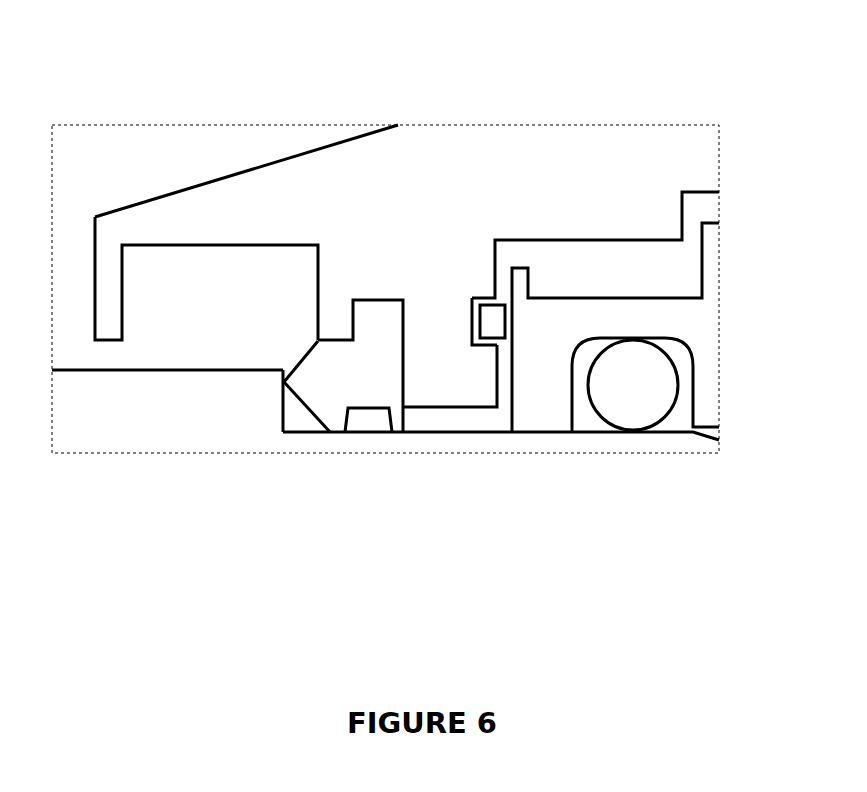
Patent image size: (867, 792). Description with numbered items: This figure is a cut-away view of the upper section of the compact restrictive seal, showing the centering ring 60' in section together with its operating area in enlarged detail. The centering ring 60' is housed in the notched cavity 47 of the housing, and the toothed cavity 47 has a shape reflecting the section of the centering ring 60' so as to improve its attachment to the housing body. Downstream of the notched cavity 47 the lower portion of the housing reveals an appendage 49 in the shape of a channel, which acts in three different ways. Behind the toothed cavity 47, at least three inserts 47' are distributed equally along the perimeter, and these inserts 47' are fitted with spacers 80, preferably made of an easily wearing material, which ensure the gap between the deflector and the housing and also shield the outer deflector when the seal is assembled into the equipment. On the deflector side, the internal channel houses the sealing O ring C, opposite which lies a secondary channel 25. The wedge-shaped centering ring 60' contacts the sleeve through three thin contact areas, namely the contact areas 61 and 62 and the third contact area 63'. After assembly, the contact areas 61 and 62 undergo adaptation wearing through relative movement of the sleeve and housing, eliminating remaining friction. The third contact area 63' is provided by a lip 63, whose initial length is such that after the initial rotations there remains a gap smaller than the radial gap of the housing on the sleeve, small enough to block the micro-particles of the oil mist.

The appendage 49 is at (167, 242).
The notched cavity 47 is at (559, 222).
The inserts 47' is at (497, 447).
The spacers 80 is at (493, 317).
The secondary channel 25 is at (610, 282).
The centering ring 60' is at (190, 429).
The contact area 61 is at (282, 372).
The contact area 62 is at (330, 432).
The lip 63 is at (362, 469).
The third contact area 63' is at (388, 411).
The sealing O ring C is at (627, 398).